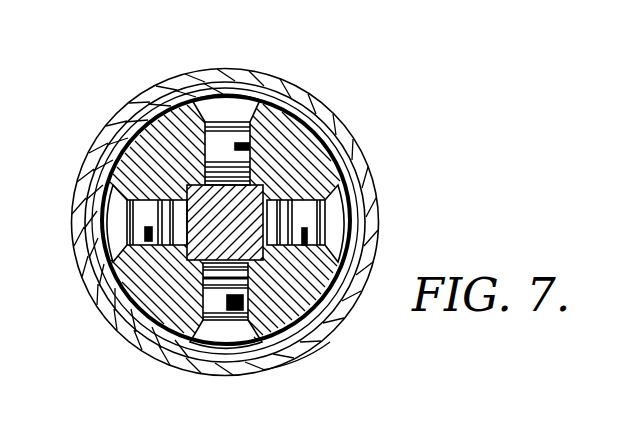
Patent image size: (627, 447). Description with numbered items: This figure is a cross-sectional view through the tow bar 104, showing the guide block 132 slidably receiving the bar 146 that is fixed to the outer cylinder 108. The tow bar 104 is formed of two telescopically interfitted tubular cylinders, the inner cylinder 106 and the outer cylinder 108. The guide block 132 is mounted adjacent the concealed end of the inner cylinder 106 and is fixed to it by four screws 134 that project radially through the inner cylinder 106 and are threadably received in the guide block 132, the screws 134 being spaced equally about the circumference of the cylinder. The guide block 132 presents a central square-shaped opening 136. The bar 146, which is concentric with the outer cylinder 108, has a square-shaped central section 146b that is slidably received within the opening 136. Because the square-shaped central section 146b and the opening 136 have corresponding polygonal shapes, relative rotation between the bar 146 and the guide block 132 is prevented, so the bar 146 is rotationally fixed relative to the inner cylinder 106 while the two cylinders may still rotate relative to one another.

The tow bar 104 is at (293, 82).
The inner cylinder 106 is at (317, 155).
The outer cylinder 108 is at (337, 320).
The guide block 132 is at (150, 165).
The screws 134 is at (224, 110).
The central square-shaped opening 136 is at (117, 327).
The bar 146 is at (143, 95).
The square-shaped central section 146b is at (292, 362).